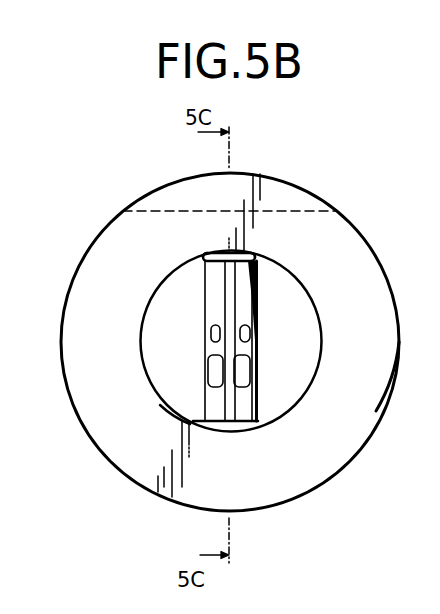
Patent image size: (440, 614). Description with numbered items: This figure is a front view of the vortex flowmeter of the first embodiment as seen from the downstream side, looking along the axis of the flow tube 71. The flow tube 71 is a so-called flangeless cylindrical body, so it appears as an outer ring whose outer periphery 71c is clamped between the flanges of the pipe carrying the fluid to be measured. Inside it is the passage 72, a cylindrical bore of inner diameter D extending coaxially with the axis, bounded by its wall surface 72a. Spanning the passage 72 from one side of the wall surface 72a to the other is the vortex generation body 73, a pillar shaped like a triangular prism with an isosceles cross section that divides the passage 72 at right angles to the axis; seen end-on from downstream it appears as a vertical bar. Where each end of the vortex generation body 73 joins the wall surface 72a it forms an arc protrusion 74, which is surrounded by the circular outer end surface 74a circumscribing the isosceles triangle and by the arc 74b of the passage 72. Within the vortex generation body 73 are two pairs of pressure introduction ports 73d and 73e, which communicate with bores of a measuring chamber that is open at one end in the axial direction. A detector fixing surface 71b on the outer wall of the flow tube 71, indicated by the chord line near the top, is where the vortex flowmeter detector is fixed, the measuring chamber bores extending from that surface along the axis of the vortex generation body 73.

The flow tube 71 is at (347, 204).
The detector fixing surface 71b is at (285, 212).
The outer peripheral surface of knob 71c is at (373, 291).
The passage 72 is at (158, 380).
The wall surface 72a is at (173, 403).
The vortex generation body 73 is at (206, 347).
The pressure introduction ports 73d is at (216, 366).
The pressure introduction ports 73e is at (213, 331).
The arc protrusion 74 is at (214, 253).
The circular outer end surface 74a is at (207, 264).
The arc 74b is at (244, 256).